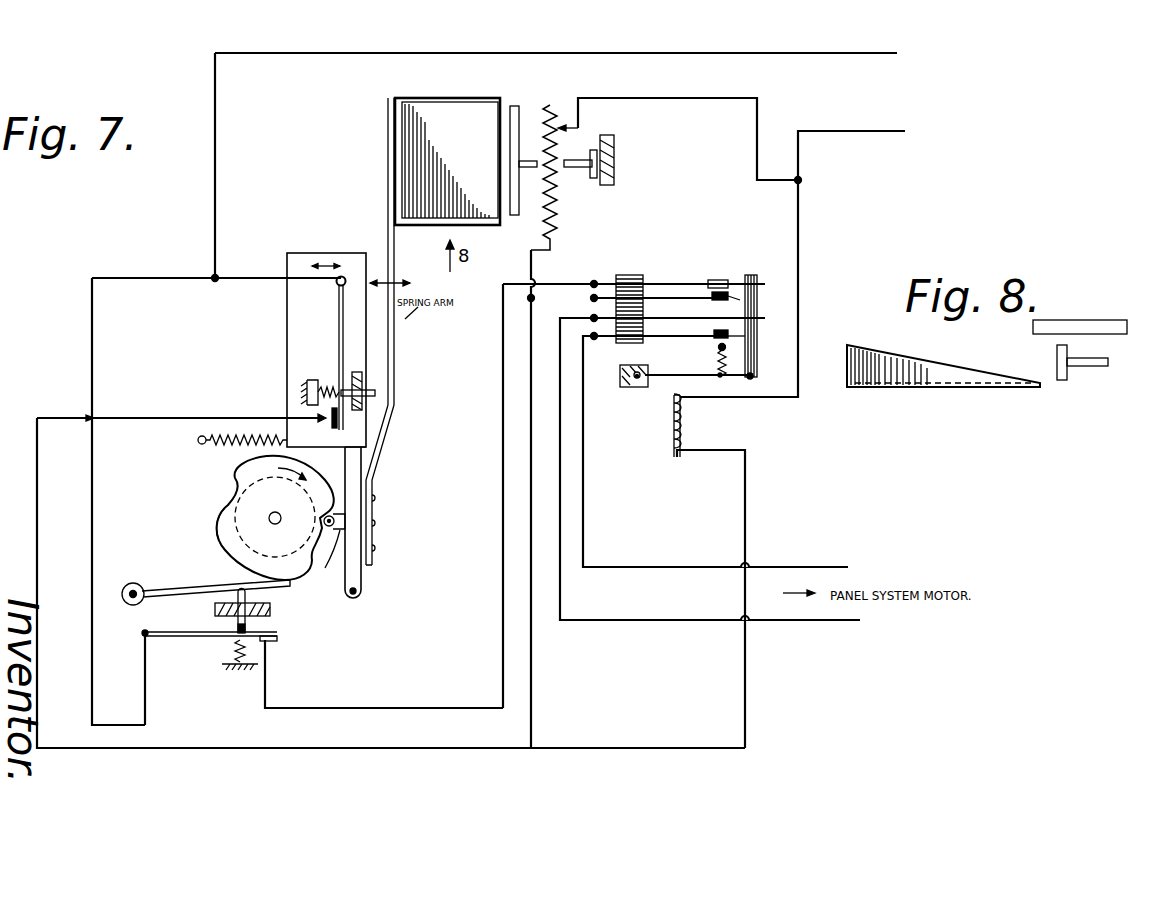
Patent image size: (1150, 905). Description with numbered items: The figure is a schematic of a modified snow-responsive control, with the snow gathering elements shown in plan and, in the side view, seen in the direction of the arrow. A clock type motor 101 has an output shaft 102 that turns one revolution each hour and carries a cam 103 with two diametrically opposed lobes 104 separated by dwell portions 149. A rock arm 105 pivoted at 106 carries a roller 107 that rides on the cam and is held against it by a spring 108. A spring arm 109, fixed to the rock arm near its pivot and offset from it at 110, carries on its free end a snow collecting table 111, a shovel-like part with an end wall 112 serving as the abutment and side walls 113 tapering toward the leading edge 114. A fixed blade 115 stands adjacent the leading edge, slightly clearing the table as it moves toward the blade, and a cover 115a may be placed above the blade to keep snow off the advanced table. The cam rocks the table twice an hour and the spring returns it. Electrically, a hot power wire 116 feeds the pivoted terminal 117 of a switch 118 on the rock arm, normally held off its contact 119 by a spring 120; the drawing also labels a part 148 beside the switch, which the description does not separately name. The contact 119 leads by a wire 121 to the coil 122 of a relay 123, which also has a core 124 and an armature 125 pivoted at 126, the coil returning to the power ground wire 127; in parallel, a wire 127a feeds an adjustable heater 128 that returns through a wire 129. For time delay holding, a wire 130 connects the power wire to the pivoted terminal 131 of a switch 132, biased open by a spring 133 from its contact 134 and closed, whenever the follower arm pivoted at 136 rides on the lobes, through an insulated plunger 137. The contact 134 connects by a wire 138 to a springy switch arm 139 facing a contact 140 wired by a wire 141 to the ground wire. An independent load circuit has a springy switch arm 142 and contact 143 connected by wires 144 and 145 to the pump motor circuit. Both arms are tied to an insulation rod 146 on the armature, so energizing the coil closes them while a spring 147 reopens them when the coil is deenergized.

In FIG. 7, the clock type motor 101 is at (250, 472).
In FIG. 7, the output shaft 102 is at (270, 516).
In FIG. 7, the cam 103 is at (232, 519).
In FIG. 7, the lobes 104 is at (224, 548).
In FIG. 7, the rock arm 105 is at (364, 574).
In FIG. 7, the pivot 106 is at (355, 598).
In FIG. 7, the roller 107 is at (331, 558).
In FIG. 7, the spring 108 is at (226, 443).
In FIG. 7, the spring arm 109 is at (390, 435).
In FIG. 7, the offset 110 is at (396, 352).
In FIG. 7, the snow collecting table 111 is at (426, 175).
In FIG. 8, the snow collecting table 111 is at (930, 389).
In FIG. 7, the end wall 112 is at (408, 126).
In FIG. 8, the end wall 112 is at (846, 376).
In FIG. 7, the side walls 113 is at (443, 97).
In FIG. 8, the side walls 113 is at (905, 352).
In FIG. 7, the leading edge 114 is at (513, 104).
In FIG. 8, the leading edge 114 is at (1041, 380).
In FIG. 7, the fixed blade 115 is at (560, 108).
In FIG. 8, the fixed blade 115 is at (1062, 382).
In FIG. 8, the cover 115a is at (1095, 318).
In FIG. 7, the hot power wire 116 is at (810, 52).
In FIG. 7, the pivoted terminal 117 is at (344, 268).
In FIG. 7, the switch 118 is at (335, 300).
In FIG. 7, the switch contact 119 is at (317, 426).
In FIG. 7, the spring 120 is at (320, 384).
In FIG. 7, the wire 121 is at (46, 416).
In FIG. 7, the coil 122 is at (688, 430).
In FIG. 7, the relay 123 is at (664, 431).
In FIG. 7, the core 124 is at (672, 460).
In FIG. 7, the armature 125 is at (676, 376).
In FIG. 7, the pivot 126 is at (642, 388).
In FIG. 7, the power ground wire 127 is at (828, 135).
In FIG. 7, the wire 127a is at (540, 660).
In FIG. 7, the adjustable heater 128 is at (556, 214).
In FIG. 7, the wire 129 is at (727, 108).
In FIG. 7, the wire 130 is at (142, 277).
In FIG. 7, the pivoted terminal 131 is at (142, 634).
In FIG. 7, the switch 132 is at (194, 632).
In FIG. 7, the spring 133 is at (234, 652).
In FIG. 7, the switch contact 134 is at (272, 643).
In FIG. 7, the pivot 136 is at (135, 588).
In FIG. 7, the insulated plunger 137 is at (272, 612).
In FIG. 7, the wire 138 is at (501, 642).
In FIG. 7, the springy switch arm 139 is at (722, 281).
In FIG. 7, the contact 140 is at (718, 297).
In FIG. 7, the wire 141 is at (563, 298).
In FIG. 7, the springy switch arm 142 is at (748, 316).
In FIG. 7, the contact 143 is at (752, 336).
In FIG. 7, the wire 144 is at (561, 515).
In FIG. 7, the wire 145 is at (584, 549).
In FIG. 7, the insulation rod 146 is at (757, 274).
In FIG. 7, the spring 147 is at (728, 347).
In FIG. 7, the pin 148 is at (368, 392).
In FIG. 7, the dwell portions 149 is at (314, 538).